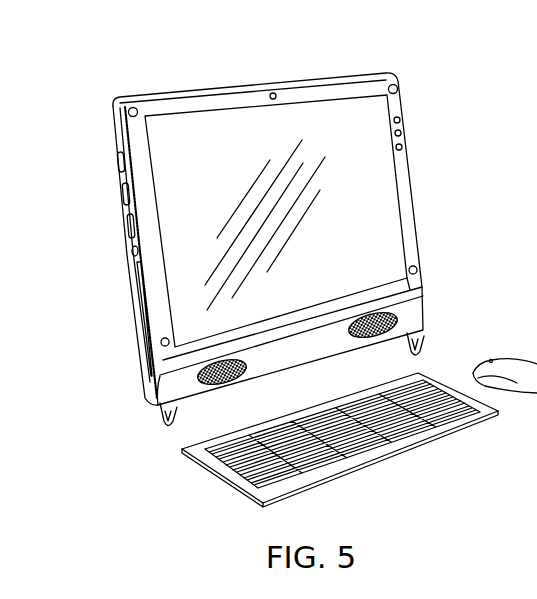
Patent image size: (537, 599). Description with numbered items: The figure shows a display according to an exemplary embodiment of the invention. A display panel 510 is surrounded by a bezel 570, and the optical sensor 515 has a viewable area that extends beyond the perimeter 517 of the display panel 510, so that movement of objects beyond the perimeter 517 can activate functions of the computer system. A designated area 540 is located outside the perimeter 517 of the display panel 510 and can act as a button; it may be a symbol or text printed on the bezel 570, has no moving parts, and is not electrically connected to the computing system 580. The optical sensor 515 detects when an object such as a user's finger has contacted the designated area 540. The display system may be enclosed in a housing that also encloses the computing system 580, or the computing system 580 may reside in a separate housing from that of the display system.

The display panel 510 is at (347, 122).
The optical sensor 515 is at (112, 106).
The perimeter 517 is at (412, 182).
The designated area 540 is at (404, 146).
The bezel 570 is at (408, 232).
The computing system 580 is at (118, 202).